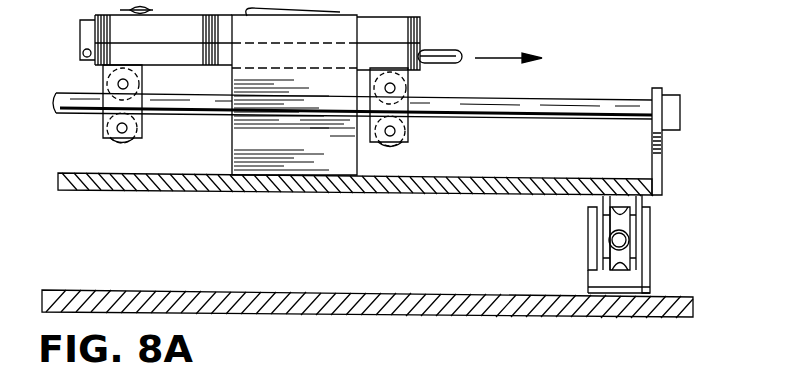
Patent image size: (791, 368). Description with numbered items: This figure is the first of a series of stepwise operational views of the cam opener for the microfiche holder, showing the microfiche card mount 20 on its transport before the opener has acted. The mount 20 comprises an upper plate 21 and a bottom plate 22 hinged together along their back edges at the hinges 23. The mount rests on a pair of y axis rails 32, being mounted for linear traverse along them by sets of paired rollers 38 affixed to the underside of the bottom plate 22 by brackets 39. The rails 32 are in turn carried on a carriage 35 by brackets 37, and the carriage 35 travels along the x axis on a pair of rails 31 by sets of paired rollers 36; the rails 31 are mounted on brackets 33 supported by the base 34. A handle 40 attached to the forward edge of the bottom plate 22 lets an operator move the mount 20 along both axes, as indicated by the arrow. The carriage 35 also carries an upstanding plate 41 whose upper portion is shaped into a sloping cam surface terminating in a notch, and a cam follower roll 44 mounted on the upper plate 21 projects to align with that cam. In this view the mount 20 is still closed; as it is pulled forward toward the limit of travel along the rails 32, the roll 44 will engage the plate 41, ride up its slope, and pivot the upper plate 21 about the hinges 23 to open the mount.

The microfiche card mount 20 is at (452, 32).
The upper plate 21 is at (425, 40).
The bottom plate 22 is at (183, 53).
The hinges 23 is at (80, 42).
The x axis rails 31 is at (630, 243).
The y axis rails 32 is at (543, 108).
The brackets 33 is at (633, 278).
The base 34 is at (518, 293).
The carriage 35 is at (505, 186).
The paired rollers 36 is at (638, 214).
The brackets 37 is at (663, 156).
The paired rollers 38 is at (118, 142).
The brackets 39 is at (103, 85).
The handle 40 is at (452, 50).
The upstanding plate 41 is at (248, 138).
The cam follower roll 44 is at (145, 12).